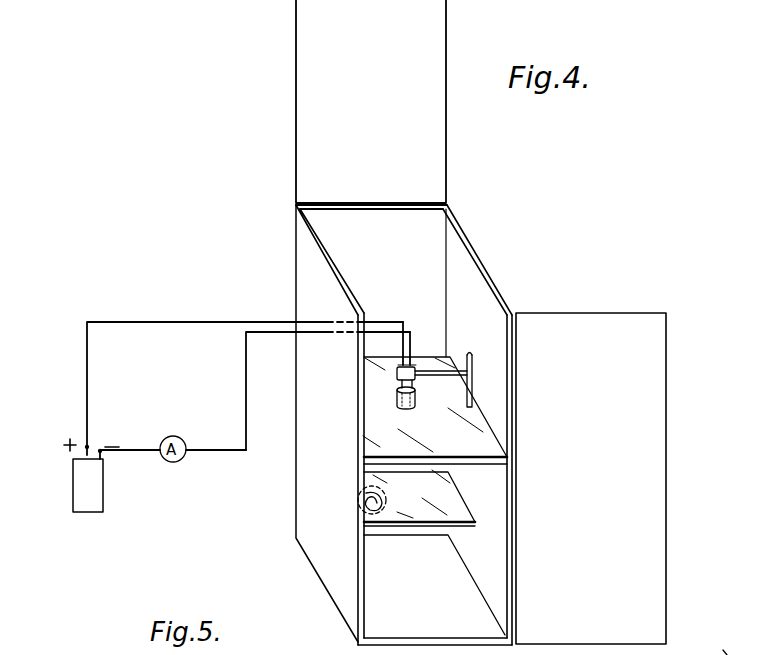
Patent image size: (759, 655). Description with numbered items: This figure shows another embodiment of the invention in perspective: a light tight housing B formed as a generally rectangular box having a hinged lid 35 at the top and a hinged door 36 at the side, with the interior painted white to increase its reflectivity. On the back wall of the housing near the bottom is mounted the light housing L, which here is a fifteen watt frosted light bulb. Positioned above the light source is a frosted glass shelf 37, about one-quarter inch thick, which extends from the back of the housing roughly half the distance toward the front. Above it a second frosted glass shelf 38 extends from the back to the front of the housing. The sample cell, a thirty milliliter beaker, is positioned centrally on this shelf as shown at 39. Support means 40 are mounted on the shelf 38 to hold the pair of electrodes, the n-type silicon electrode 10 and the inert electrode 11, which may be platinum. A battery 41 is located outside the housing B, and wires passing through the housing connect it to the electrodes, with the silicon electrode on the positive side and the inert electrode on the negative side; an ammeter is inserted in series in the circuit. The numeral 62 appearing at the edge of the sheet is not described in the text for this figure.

In FIG. 4, the hinged lid 35 is at (296, 92).
In FIG. 4, the light tight housing B is at (312, 268).
In FIG. 4, the second frosted glass shelf 38 is at (387, 428).
In FIG. 4, the frosted glass shelf 37 is at (398, 474).
In FIG. 4, the light housing L is at (384, 522).
In FIG. 4, the n-type silicon electrode 10 is at (410, 366).
In FIG. 4, the inert electrode 11 is at (398, 368).
In FIG. 4, the sample cell 39 is at (397, 403).
In FIG. 4, the support means 40 is at (477, 357).
In FIG. 4, the hinged door 36 is at (666, 428).
In FIG. 4, the battery 41 is at (73, 492).
In FIG. 5, the element of fig. 5 62 is at (718, 645).